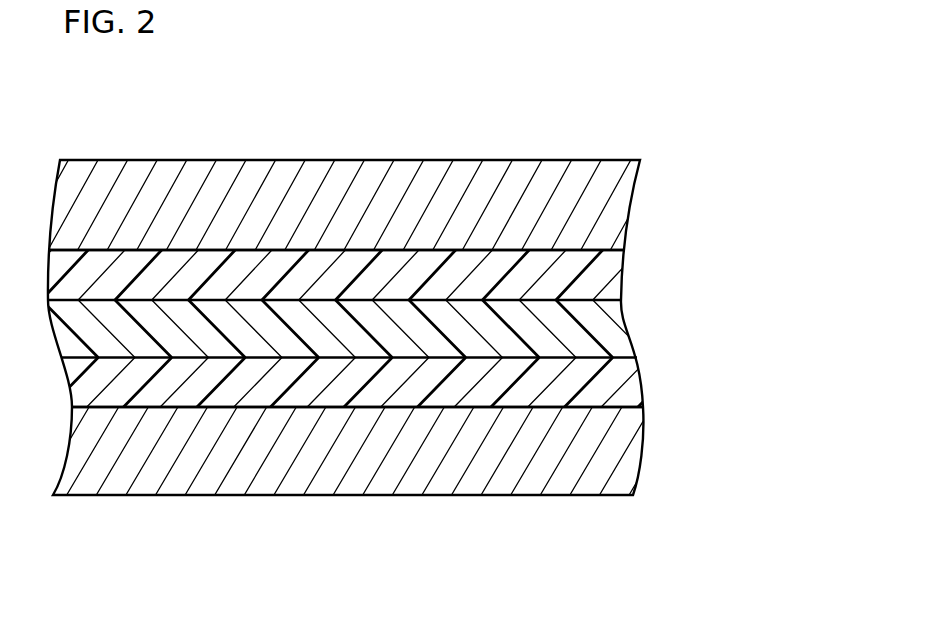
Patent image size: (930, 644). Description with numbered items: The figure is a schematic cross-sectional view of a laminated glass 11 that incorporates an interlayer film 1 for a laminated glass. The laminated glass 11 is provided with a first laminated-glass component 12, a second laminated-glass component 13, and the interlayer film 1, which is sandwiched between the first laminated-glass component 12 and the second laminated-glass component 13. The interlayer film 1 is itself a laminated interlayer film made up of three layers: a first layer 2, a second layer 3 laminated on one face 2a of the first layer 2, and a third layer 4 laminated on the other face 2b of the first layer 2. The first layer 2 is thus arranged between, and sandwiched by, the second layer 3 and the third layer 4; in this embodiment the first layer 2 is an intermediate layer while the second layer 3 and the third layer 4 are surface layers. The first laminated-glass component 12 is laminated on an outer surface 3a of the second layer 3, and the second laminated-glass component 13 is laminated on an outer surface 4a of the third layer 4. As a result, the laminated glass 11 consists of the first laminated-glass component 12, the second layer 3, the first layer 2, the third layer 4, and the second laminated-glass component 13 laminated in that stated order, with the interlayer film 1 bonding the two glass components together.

The laminated glass 11 is at (133, 128).
The interlayer film 1 is at (356, 238).
The first laminated-glass component 12 is at (630, 208).
The second laminated-glass component 13 is at (647, 445).
The second layer 3 is at (636, 277).
The first layer 2 is at (641, 327).
The third layer 4 is at (656, 377).
The one face 2a is at (461, 300).
The other face 2b is at (462, 358).
The outer surface of the second layer 3a is at (565, 250).
The outer surface of the third layer 4a is at (568, 407).